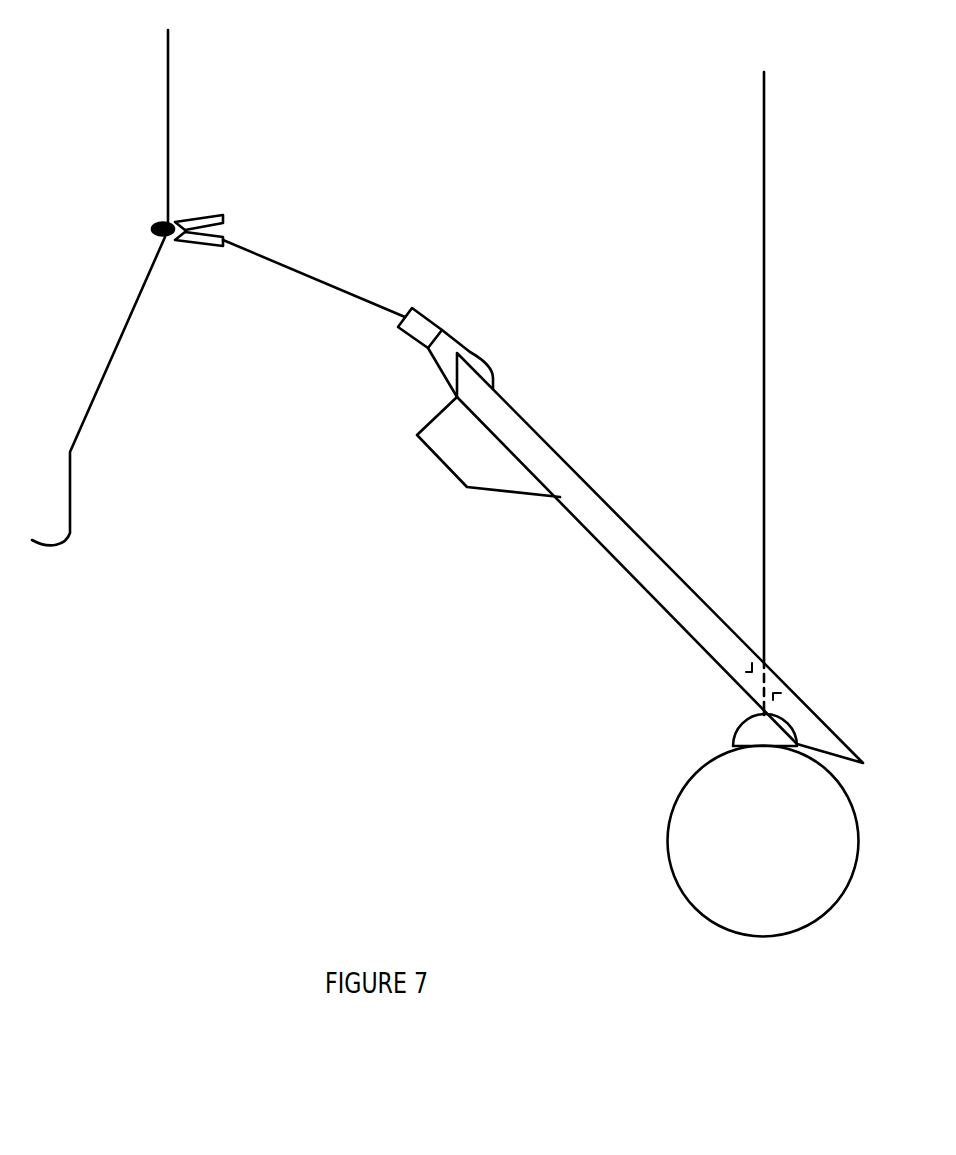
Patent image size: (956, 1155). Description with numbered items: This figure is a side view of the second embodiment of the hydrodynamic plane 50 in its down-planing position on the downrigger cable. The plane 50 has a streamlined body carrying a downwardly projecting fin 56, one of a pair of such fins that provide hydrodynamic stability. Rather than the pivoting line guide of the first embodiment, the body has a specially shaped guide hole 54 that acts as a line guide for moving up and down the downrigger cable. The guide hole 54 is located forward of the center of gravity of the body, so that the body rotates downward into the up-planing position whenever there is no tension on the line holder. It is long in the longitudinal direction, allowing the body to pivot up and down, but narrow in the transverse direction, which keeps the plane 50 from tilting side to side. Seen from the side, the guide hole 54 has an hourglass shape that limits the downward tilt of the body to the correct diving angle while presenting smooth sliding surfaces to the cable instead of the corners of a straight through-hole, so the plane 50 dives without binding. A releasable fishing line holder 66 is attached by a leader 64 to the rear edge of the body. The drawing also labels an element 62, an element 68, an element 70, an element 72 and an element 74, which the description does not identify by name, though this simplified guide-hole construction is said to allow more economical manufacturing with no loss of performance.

The hydrodynamic plane 50 is at (613, 590).
The guide hole 54 is at (750, 692).
The fin 56 is at (453, 470).
The end cap 62 is at (450, 332).
The leader 64 is at (353, 296).
The releasable fishing line holder 66 is at (215, 218).
The ball 68 is at (667, 842).
The plumb line 70 is at (763, 313).
The support line 72 is at (168, 115).
The hook line 74 is at (66, 538).